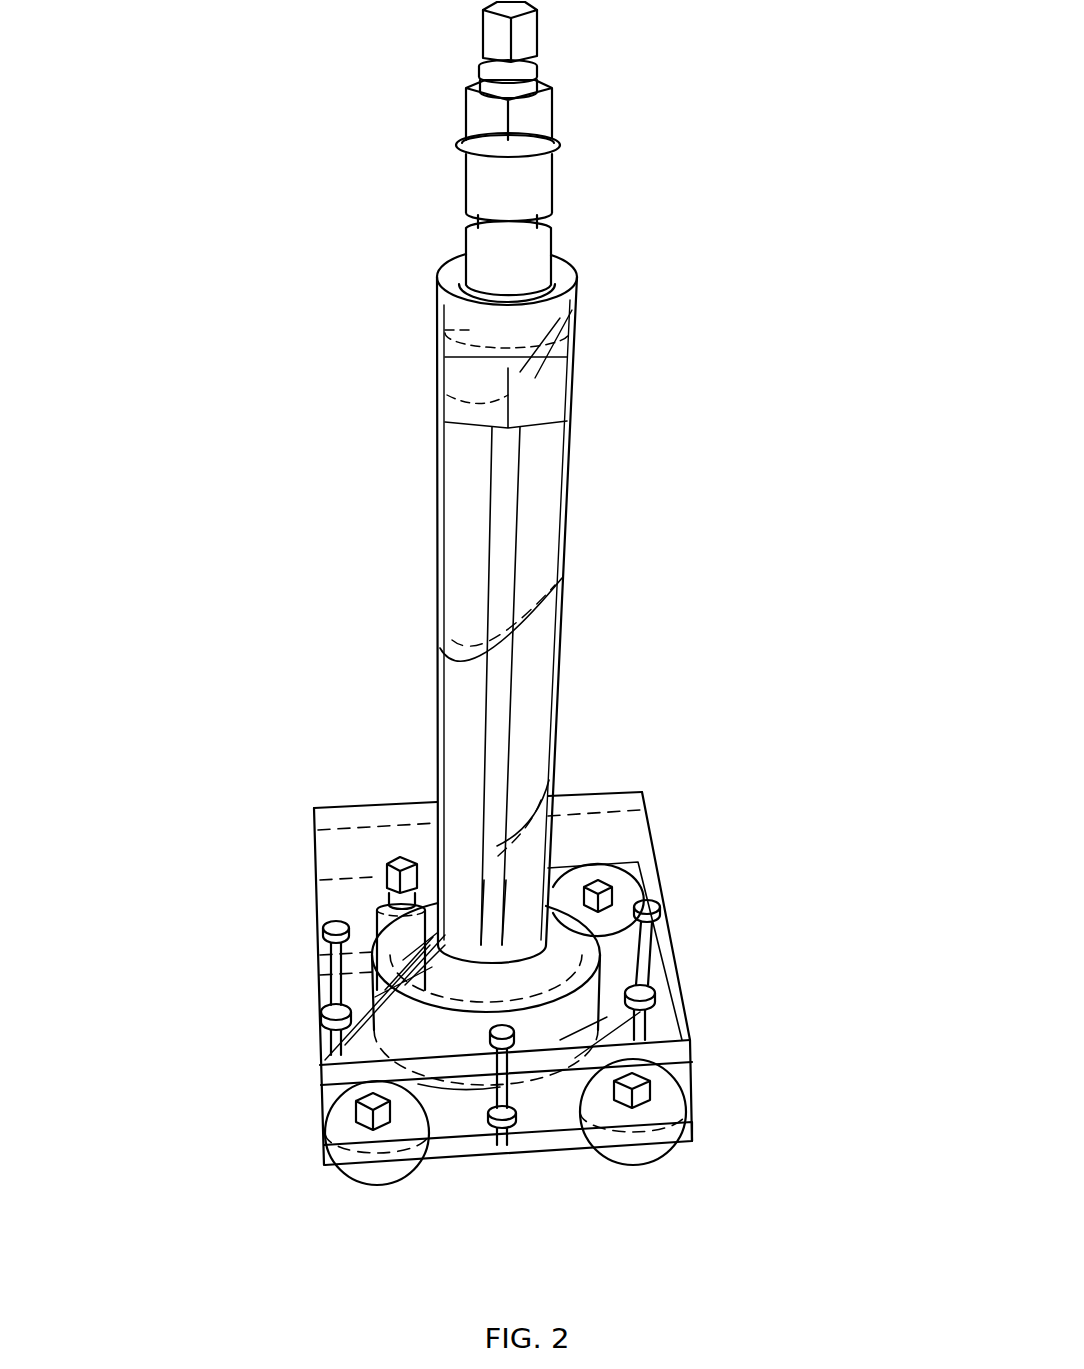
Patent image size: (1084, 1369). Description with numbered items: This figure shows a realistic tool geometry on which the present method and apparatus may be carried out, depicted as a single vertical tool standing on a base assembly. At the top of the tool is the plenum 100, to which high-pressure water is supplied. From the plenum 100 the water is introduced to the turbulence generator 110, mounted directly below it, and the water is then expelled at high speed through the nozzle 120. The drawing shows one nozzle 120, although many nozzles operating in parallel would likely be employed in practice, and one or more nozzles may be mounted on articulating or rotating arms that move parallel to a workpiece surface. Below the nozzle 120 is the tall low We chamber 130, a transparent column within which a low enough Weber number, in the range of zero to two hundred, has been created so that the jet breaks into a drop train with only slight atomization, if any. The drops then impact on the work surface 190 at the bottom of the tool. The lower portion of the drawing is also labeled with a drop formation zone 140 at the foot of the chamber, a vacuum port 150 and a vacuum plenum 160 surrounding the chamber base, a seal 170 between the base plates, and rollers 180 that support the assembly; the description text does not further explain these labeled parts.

The plenum 100 is at (537, 124).
The turbulence generator 110 is at (478, 252).
The nozzle 120 is at (510, 413).
The low We chamber 130 is at (553, 533).
The drop formation zone 140 is at (457, 878).
The vacuum port 150 is at (405, 868).
The vacuum plenum 160 is at (570, 952).
The seal 170 is at (468, 1112).
The rollers 180 is at (852, 1122).
The work surface 190 is at (98, 1243).